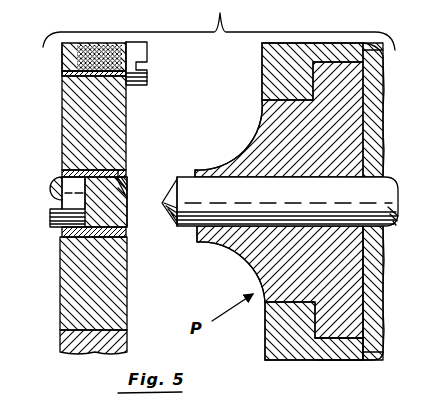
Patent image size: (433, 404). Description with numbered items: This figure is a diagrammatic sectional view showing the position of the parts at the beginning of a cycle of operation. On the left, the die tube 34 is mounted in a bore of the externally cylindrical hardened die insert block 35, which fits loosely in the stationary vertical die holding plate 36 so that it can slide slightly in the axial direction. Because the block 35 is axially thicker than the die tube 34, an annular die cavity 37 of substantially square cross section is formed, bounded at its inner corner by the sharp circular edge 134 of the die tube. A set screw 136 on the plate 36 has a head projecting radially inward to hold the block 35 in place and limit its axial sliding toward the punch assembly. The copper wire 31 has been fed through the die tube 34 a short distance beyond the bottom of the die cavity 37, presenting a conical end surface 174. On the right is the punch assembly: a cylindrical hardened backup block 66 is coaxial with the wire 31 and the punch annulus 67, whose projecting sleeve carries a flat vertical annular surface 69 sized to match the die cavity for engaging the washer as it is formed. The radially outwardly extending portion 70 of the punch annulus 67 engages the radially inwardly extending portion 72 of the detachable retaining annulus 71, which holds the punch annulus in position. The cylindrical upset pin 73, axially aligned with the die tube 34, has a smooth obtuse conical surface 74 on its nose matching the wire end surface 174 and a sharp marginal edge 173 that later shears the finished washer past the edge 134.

The set screw 136 is at (128, 68).
The die tube 34 is at (63, 173).
The sharp circular edge 134 is at (94, 123).
The annular die cavity 37 is at (126, 175).
The copper wire 31 is at (50, 192).
The die insert block 35 is at (67, 278).
The die holding plate 36 is at (93, 343).
The conical end surface 174 is at (127, 214).
The punch annulus 67 is at (264, 117).
The backup block 66 is at (377, 133).
The flat vertical annular surface 69 is at (200, 243).
The radially inwardly extending portion 72 is at (289, 300).
The retaining annulus 71 is at (304, 350).
The radially outwardly extending portion 70 is at (347, 329).
The upset pin 73 is at (290, 208).
The sharp marginal edge 173 is at (177, 229).
The conical surface 74 is at (163, 200).